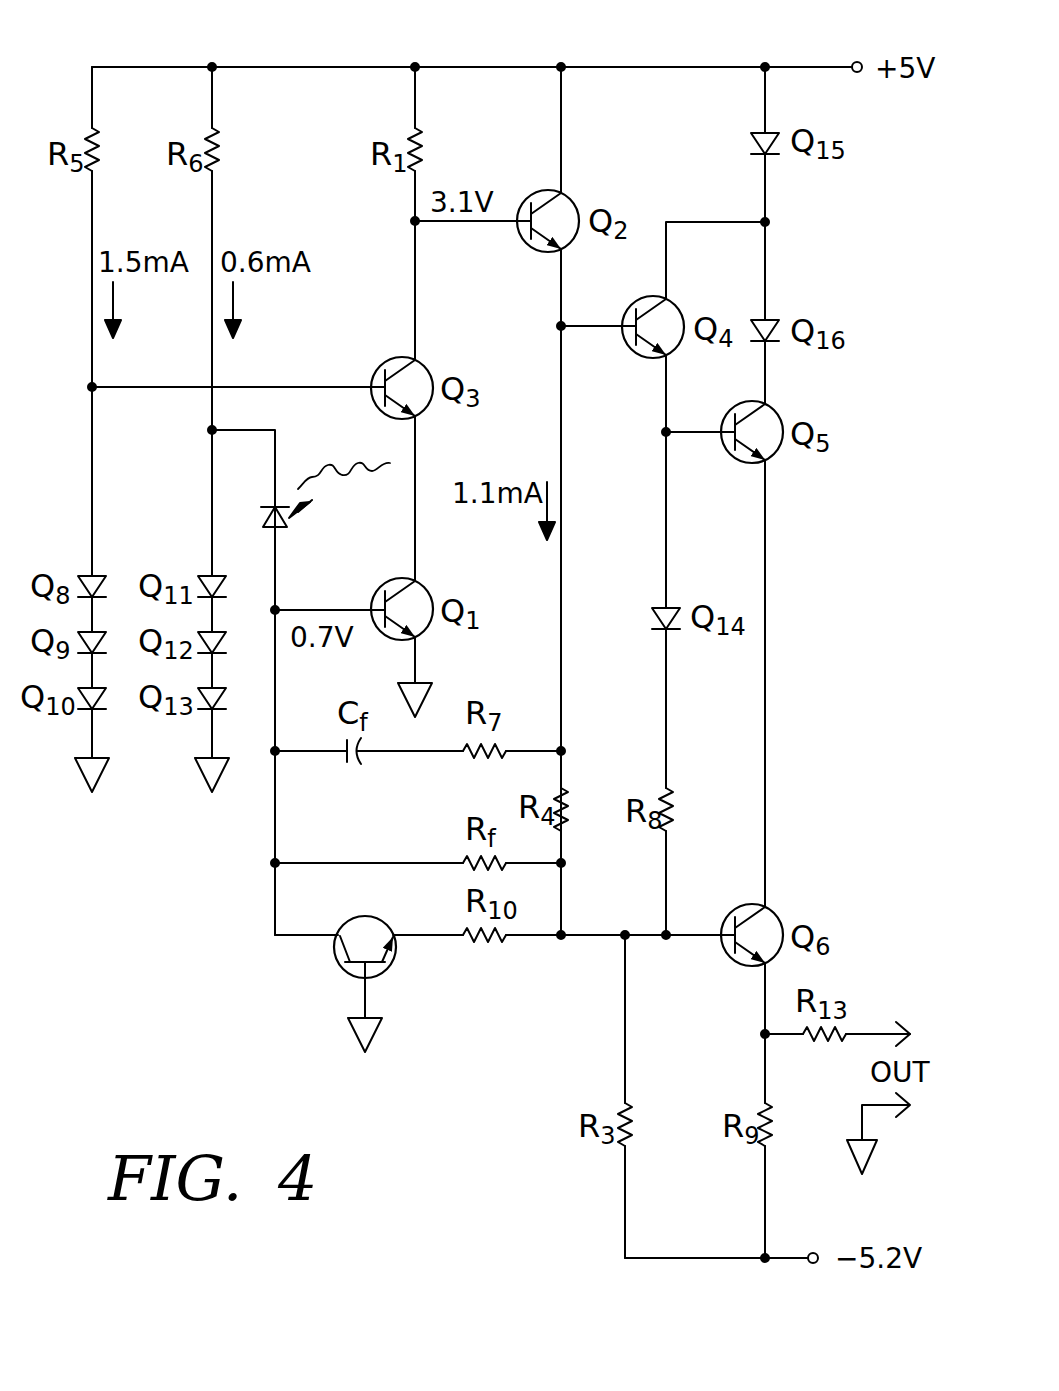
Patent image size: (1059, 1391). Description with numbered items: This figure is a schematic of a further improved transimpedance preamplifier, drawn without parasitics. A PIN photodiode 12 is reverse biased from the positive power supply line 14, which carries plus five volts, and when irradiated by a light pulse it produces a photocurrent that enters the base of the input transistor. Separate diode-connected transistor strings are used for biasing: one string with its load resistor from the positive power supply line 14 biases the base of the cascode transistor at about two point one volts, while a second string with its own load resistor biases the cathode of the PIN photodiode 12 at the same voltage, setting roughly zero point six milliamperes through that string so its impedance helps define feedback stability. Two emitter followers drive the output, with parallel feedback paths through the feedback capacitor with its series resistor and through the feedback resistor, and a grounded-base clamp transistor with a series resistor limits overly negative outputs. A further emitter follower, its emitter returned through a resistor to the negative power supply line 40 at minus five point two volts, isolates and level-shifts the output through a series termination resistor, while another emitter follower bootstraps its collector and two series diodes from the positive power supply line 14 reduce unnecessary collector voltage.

The positive power supply line 14 is at (318, 67).
The PIN photodiode 12 is at (280, 527).
The negative power supply line 40 is at (699, 1258).